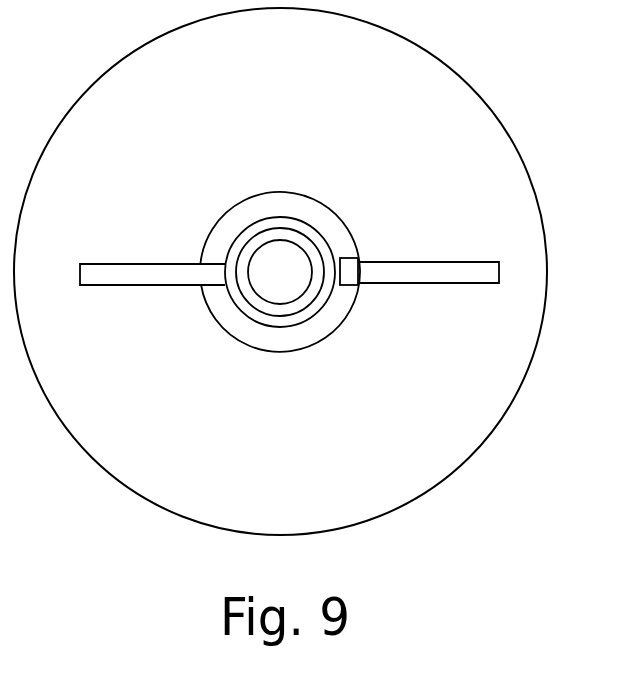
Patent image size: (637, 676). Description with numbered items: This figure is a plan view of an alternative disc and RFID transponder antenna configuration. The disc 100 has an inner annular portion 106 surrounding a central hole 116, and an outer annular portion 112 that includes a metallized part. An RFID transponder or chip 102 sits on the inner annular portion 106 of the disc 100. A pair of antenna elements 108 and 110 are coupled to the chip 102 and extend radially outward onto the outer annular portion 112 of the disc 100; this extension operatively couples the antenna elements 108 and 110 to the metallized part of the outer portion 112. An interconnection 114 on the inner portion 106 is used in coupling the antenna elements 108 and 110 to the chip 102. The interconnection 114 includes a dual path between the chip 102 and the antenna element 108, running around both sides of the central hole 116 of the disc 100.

The disc 100 is at (426, 50).
The RFID transponder chip 102 is at (347, 270).
The inner annular portion 106 is at (297, 205).
The antenna element 108 is at (142, 275).
The antenna element 110 is at (408, 268).
The outer annular portion 112 is at (300, 106).
The interconnection 114 is at (320, 237).
The central hole 116 is at (309, 284).